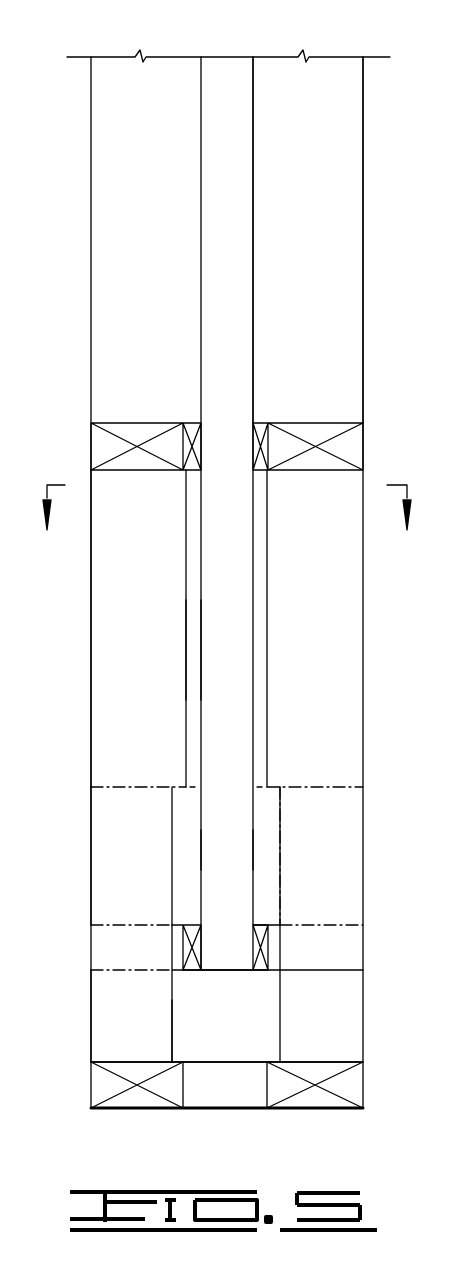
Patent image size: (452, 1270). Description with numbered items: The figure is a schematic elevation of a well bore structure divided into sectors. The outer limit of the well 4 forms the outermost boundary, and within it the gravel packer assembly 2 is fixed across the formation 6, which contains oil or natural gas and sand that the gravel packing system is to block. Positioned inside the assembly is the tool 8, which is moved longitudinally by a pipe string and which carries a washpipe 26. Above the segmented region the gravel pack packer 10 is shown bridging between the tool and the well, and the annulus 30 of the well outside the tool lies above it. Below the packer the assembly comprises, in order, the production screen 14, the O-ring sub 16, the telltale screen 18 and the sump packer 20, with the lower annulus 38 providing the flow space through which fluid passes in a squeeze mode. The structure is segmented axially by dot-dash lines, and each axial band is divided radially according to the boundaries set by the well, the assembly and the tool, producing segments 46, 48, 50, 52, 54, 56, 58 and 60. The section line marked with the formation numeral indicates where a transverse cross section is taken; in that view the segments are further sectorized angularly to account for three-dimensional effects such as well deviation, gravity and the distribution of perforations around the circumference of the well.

The gravel packer assembly 2 is at (275, 564).
The well 4 is at (356, 118).
The formation 6 is at (224, 523).
The tool 8 is at (258, 85).
The gravel pack packer 10 is at (340, 423).
The production screen 14 is at (280, 820).
The O-ring sub 16 is at (258, 950).
The telltale screen 18 is at (280, 1018).
The sump packer 20 is at (345, 1085).
The washpipe 26 is at (255, 902).
The annulus 30 is at (335, 190).
The lower annulus 38 is at (130, 500).
The segment 46 is at (130, 607).
The segment 48 is at (125, 863).
The segment 50 is at (145, 946).
The segment 52 is at (140, 1003).
The segment 54 is at (192, 670).
The segment 56 is at (183, 823).
The segment 58 is at (195, 1040).
The segment 60 is at (240, 850).